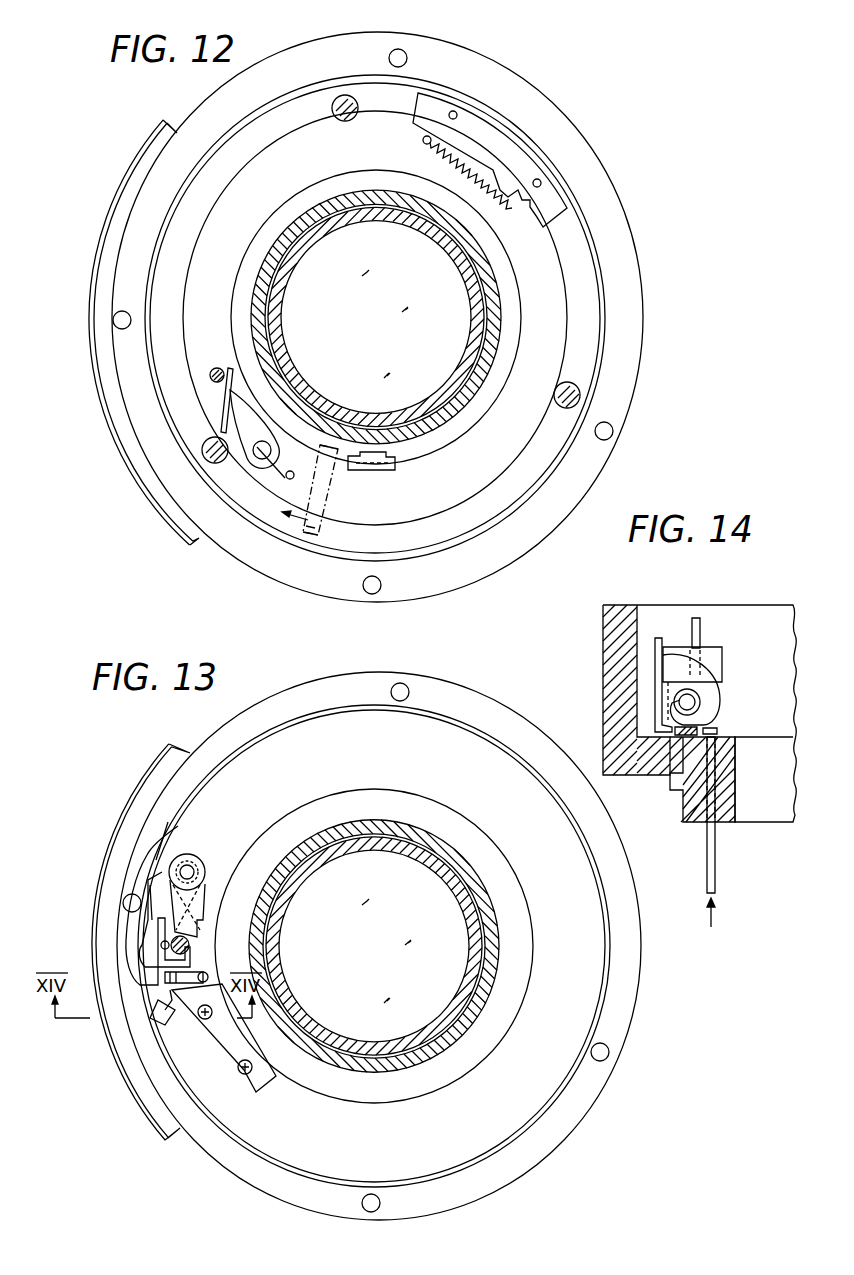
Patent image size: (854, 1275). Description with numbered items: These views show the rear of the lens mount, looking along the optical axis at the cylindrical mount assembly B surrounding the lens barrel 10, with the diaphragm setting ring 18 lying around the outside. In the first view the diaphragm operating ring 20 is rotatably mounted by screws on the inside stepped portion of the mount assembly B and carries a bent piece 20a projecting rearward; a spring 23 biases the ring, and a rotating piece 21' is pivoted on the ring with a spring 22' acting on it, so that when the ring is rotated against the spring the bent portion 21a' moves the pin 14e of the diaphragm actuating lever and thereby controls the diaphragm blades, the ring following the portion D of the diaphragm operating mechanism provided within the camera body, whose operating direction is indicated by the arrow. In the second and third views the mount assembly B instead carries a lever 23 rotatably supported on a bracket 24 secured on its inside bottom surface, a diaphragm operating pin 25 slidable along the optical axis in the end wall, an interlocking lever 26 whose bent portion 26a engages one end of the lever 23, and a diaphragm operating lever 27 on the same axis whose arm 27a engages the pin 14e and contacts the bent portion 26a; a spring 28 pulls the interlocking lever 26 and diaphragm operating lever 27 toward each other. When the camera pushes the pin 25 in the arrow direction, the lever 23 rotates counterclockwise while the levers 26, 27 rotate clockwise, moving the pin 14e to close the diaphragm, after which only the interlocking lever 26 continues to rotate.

In FIG. 12, the lens barrel 10 is at (293, 228).
In FIG. 13, the lens barrel 10 is at (333, 830).
In FIG. 12, the diaphragm setting ring 18 is at (138, 182).
In FIG. 13, the diaphragm setting ring 18 is at (140, 802).
In FIG. 12, the diaphragm operating ring 20 is at (560, 317).
In FIG. 12, the bent piece 20a is at (372, 458).
In FIG. 12, the spring / lever 23 is at (500, 168).
In FIG. 13, the spring / lever 23 is at (172, 1000).
In FIG. 14, the spring / lever 23 is at (722, 705).
In FIG. 12, the pin 14e is at (208, 372).
In FIG. 13, the pin 14e is at (170, 945).
In FIG. 14, the pin 14e is at (702, 630).
In FIG. 12, the bent portion 21a' is at (165, 429).
In FIG. 12, the rotating piece 21' is at (170, 489).
In FIG. 12, the spring 22' is at (263, 519).
In FIG. 13, the bracket 24 is at (185, 1025).
In FIG. 14, the bracket 24 is at (672, 775).
In FIG. 13, the diaphragm operating pin 25 is at (218, 1042).
In FIG. 14, the diaphragm operating pin 25 is at (716, 852).
In FIG. 13, the interlocking lever 26 is at (167, 940).
In FIG. 13, the bent portion 26a is at (153, 1015).
In FIG. 14, the bent portion 26a is at (658, 672).
In FIG. 13, the diaphragm operating lever 27 is at (169, 866).
In FIG. 13, the arm 27a is at (158, 963).
In FIG. 14, the arm 27a is at (683, 650).
In FIG. 13, the spring 28 is at (175, 913).
In FIG. 12, the mount assembly B is at (588, 138).
In FIG. 13, the mount assembly B is at (232, 1190).
In FIG. 12, the diaphragm operating mechanism portion D is at (316, 532).